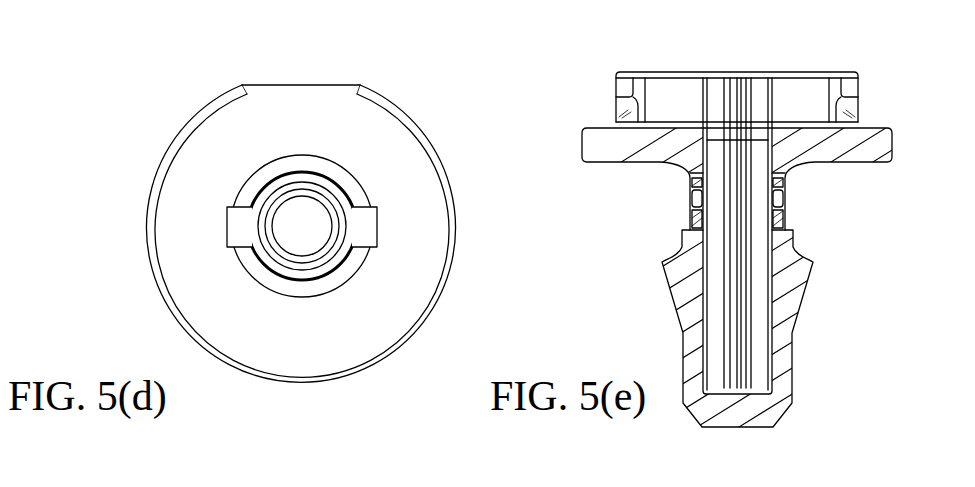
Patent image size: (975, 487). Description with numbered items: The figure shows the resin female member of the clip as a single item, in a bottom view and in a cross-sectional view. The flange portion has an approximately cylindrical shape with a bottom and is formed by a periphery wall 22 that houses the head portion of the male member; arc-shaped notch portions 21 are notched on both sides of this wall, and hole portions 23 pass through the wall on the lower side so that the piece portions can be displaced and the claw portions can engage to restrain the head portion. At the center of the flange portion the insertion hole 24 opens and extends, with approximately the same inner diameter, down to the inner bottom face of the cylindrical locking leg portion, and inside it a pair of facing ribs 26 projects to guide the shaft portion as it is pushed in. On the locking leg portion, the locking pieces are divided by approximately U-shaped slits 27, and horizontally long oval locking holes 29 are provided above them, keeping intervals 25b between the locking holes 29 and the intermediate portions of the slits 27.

The notch portions 21 is at (613, 123).
The periphery wall 22 is at (618, 75).
The hole portions 23 is at (618, 113).
The insertion hole 24 is at (750, 135).
The intervals 25b is at (692, 200).
The ribs 26 is at (737, 145).
The slits 27 is at (692, 222).
The locking holes 29 is at (692, 182).